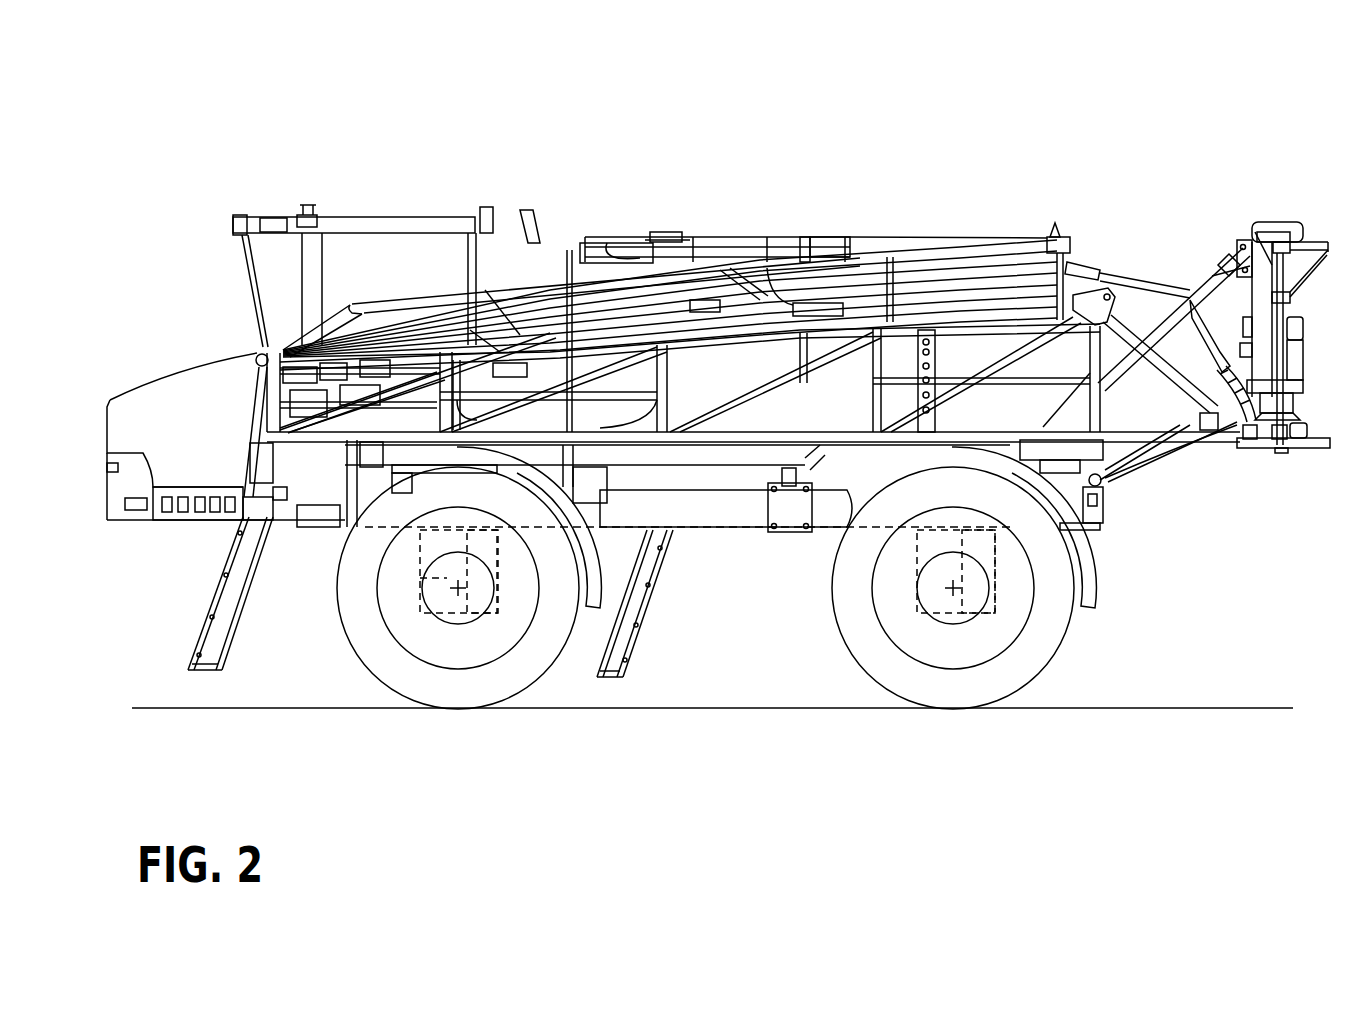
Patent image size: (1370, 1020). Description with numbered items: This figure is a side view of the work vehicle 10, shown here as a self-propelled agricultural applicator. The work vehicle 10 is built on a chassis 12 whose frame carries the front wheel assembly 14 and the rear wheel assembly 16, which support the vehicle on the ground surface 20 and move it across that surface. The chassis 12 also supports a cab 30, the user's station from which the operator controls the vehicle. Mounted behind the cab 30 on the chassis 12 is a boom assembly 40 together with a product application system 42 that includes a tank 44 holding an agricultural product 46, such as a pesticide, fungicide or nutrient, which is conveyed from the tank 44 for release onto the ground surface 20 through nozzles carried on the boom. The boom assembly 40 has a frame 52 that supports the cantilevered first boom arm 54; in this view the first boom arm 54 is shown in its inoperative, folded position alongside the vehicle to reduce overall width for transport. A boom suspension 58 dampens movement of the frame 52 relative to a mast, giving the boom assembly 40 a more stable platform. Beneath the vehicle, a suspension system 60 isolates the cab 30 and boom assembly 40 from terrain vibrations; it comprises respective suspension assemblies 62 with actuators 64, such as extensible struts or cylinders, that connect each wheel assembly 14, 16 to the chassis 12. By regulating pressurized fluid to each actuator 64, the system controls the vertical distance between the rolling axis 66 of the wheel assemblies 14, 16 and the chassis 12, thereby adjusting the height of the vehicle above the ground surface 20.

The work vehicle 10 is at (1108, 162).
The chassis 12 is at (718, 513).
The front wheel assembly 14 is at (545, 660).
The rear wheel assembly 16 is at (1035, 663).
The ground surface 20 is at (1240, 708).
The cab 30 is at (385, 212).
The boom assembly 40 is at (935, 208).
The product application system 42 is at (693, 228).
The tank 44 is at (600, 272).
The agricultural product 46 is at (660, 232).
The frame 52 is at (1308, 216).
The first boom arm 54 is at (893, 265).
The boom suspension 58 is at (1182, 274).
The suspension system 60 is at (507, 600).
The suspension assembly 62 is at (415, 625).
The actuator 64 is at (477, 620).
The rolling axis 66 is at (458, 595).